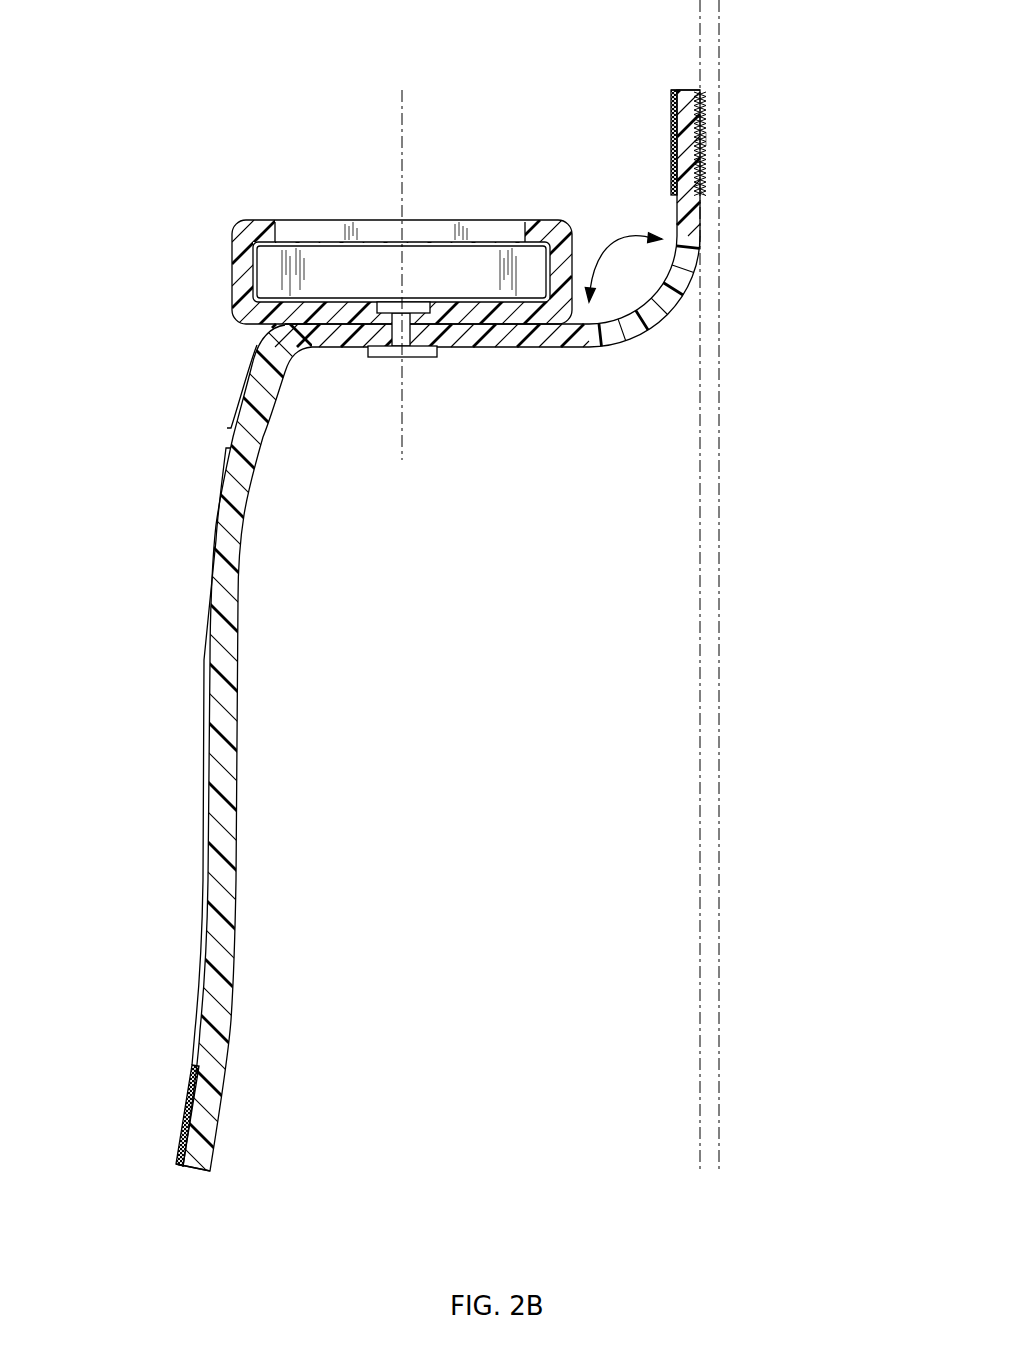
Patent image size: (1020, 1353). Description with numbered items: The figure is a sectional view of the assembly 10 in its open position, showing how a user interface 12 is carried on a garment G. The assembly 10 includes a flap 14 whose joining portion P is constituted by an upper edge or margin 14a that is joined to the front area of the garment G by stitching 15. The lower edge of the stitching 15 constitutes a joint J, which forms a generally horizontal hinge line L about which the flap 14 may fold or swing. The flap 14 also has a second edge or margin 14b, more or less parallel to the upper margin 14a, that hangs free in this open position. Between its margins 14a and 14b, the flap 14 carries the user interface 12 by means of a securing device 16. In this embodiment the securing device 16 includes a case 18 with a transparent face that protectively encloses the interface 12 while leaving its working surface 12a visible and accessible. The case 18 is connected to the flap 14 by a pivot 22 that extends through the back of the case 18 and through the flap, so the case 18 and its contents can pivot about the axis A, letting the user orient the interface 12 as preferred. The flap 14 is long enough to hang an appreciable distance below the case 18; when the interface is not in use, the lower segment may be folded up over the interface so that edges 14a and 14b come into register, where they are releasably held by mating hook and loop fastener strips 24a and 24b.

The assembly 10 is at (188, 95).
The user interface 12 is at (345, 216).
The working surface 12a is at (386, 247).
The flap 14 is at (241, 882).
The upper edge or margin 14a is at (637, 64).
The second edge or margin 14b is at (199, 1172).
The stitching 15 is at (706, 127).
The securing device 16 is at (222, 348).
The case 18 is at (247, 262).
The pivot 22 is at (406, 338).
The hook and loop fastener strip 24a is at (677, 227).
The hook and loop fastener strip 24b is at (192, 1096).
The axis A is at (403, 427).
The garment G is at (698, 37).
The joining portion P is at (722, 142).
The joint J is at (700, 196).
The hinge line L is at (686, 276).